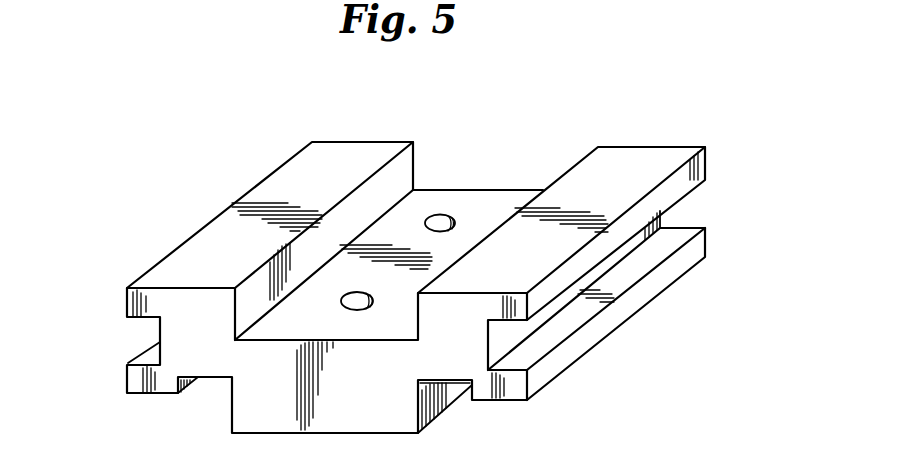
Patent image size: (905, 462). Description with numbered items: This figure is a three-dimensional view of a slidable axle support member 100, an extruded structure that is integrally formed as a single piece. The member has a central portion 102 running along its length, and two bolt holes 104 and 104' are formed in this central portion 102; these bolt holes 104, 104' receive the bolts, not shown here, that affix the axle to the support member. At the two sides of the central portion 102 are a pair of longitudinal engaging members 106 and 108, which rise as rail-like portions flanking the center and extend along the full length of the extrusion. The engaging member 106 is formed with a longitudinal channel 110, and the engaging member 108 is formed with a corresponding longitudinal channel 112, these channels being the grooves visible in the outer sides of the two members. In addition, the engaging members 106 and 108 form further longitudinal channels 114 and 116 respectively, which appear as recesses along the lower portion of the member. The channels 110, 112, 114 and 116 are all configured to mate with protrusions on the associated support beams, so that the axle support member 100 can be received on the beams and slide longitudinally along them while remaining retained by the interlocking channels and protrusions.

The axle support member 100 is at (708, 146).
The central portion 102 is at (411, 236).
The bolt hole 104 is at (326, 313).
The bolt hole 104' is at (481, 186).
The longitudinal engaging member 106 is at (617, 168).
The longitudinal engaging member 108 is at (312, 178).
The longitudinal channel 110 is at (668, 222).
The longitudinal channel 112 is at (159, 338).
The longitudinal channel 114 is at (448, 385).
The longitudinal channel 116 is at (211, 381).